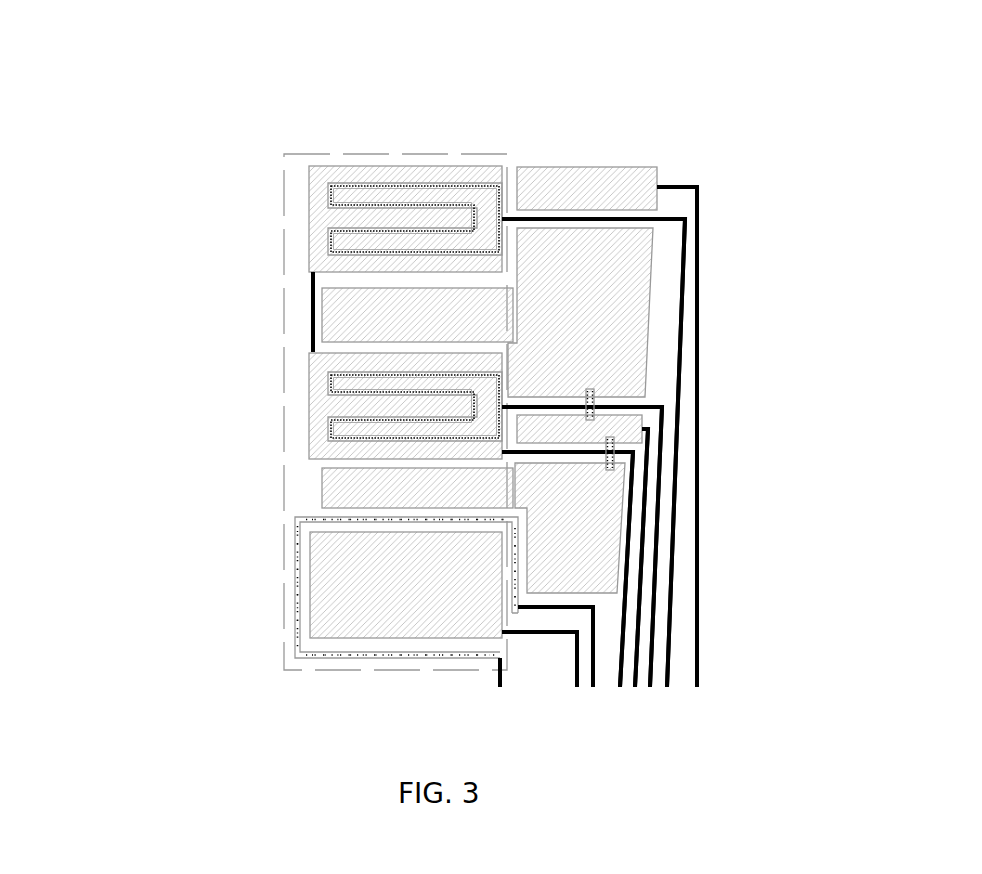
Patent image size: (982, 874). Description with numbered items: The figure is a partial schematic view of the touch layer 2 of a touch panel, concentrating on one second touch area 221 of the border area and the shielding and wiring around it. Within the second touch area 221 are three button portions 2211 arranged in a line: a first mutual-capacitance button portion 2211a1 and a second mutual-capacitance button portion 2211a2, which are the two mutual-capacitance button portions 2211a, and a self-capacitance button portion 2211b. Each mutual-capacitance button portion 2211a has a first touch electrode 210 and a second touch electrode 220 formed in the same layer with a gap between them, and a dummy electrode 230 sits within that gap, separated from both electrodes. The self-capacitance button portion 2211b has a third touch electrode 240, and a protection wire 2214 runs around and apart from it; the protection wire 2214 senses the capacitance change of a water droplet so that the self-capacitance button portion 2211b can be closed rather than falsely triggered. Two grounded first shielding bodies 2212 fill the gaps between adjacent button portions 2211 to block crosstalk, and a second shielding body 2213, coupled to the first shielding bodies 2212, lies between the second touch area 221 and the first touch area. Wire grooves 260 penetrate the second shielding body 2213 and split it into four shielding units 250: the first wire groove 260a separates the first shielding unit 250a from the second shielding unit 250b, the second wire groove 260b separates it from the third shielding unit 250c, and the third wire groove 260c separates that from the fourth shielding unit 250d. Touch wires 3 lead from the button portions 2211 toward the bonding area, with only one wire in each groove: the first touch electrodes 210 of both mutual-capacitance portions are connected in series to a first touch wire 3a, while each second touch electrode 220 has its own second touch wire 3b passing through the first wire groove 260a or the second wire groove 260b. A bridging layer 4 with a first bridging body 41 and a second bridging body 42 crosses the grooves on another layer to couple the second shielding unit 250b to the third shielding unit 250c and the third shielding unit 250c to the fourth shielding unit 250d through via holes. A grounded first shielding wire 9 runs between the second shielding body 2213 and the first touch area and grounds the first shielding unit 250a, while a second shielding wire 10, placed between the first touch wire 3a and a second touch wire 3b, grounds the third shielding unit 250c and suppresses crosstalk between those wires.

The touch layer 2 is at (242, 50).
The button portion 2211 is at (392, 52).
The mutual-capacitance button portion 2211a is at (293, 241).
The first mutual-capacitance button portion 2211a1 is at (509, 100).
The second mutual-capacitance button portion 2211a2 is at (205, 360).
The self-capacitance button portion 2211b is at (225, 637).
The second touch area 221 is at (322, 152).
The first touch electrode 210 is at (380, 165).
The dummy electrode 230 is at (445, 187).
The second touch electrode 220 is at (490, 196).
The first shielding body 2212 is at (333, 326).
The second shielding body 2213 is at (641, 143).
The protection wire 2214 is at (297, 553).
The third touch electrode 240 is at (325, 608).
The shielding unit 250 is at (674, 391).
The first shielding unit 250a is at (583, 177).
The second shielding unit 250b is at (650, 282).
The third shielding unit 250c is at (628, 427).
The fourth shielding unit 250d is at (623, 520).
The wire groove 260 is at (668, 434).
The first wire groove 260a is at (645, 212).
The second wire groove 260b is at (633, 402).
The third wire groove 260c is at (623, 457).
The first shielding wire 9 is at (699, 248).
The bridging layer 4 is at (743, 342).
The first bridging body 41 is at (590, 389).
The second bridging body 42 is at (612, 472).
The touch wire 3 is at (697, 453).
The first touch wire 3a is at (622, 665).
The second touch wire 3b is at (672, 570).
The second shielding wire 10 is at (638, 630).